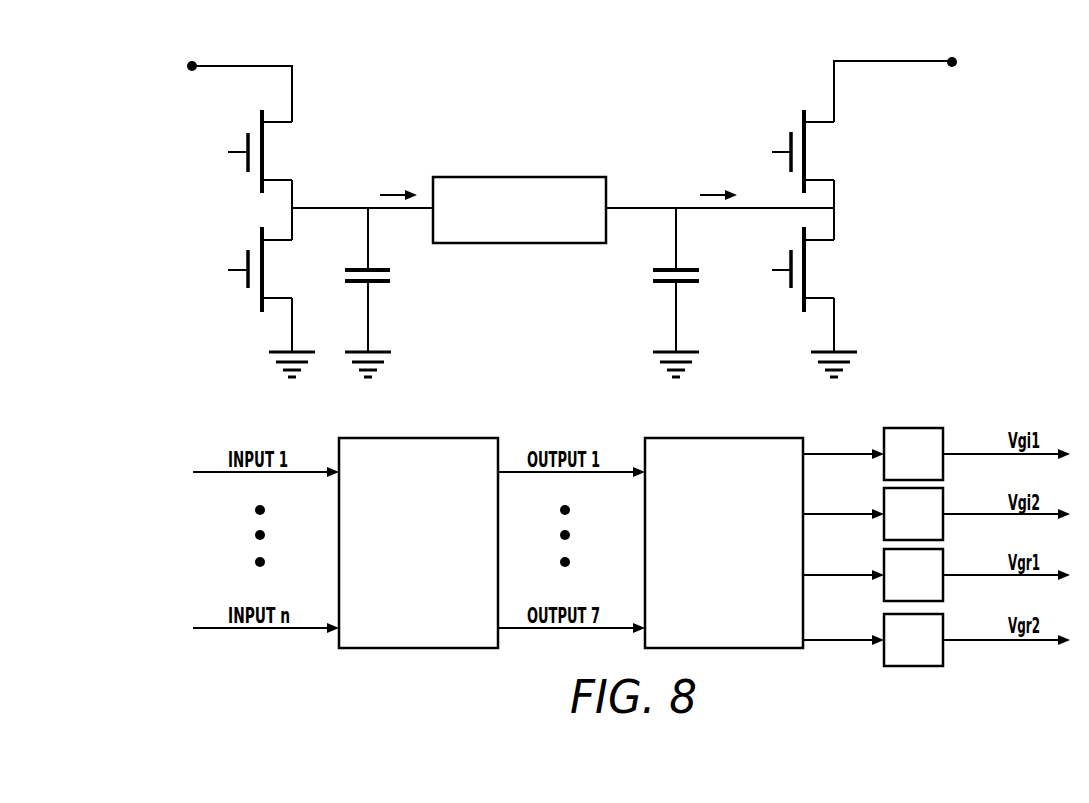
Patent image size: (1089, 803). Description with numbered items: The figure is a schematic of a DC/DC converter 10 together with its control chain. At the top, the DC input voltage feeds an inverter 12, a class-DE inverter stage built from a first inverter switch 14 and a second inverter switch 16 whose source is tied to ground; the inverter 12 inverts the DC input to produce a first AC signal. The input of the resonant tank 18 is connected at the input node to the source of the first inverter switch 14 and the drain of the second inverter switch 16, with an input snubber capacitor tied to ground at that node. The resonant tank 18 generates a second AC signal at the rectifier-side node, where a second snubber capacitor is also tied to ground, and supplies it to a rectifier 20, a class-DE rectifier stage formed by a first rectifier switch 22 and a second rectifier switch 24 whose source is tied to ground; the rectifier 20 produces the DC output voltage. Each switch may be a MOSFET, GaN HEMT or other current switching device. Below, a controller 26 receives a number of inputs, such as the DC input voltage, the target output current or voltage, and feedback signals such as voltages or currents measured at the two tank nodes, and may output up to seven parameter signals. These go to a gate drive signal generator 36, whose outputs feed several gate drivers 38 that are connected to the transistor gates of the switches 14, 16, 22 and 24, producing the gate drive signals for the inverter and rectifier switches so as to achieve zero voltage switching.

The DC/DC converter 10 is at (572, 88).
The inverter 12 is at (305, 97).
The first inverter switch 14 is at (317, 148).
The second inverter switch 16 is at (303, 282).
The resonant tank 18 is at (527, 176).
The rectifier 20 is at (803, 93).
The first rectifier switch 22 is at (847, 168).
The second rectifier switch 24 is at (867, 268).
The controller 26 is at (440, 438).
The gate drive signal generator 36 is at (745, 438).
The gate drivers 38 is at (913, 428).